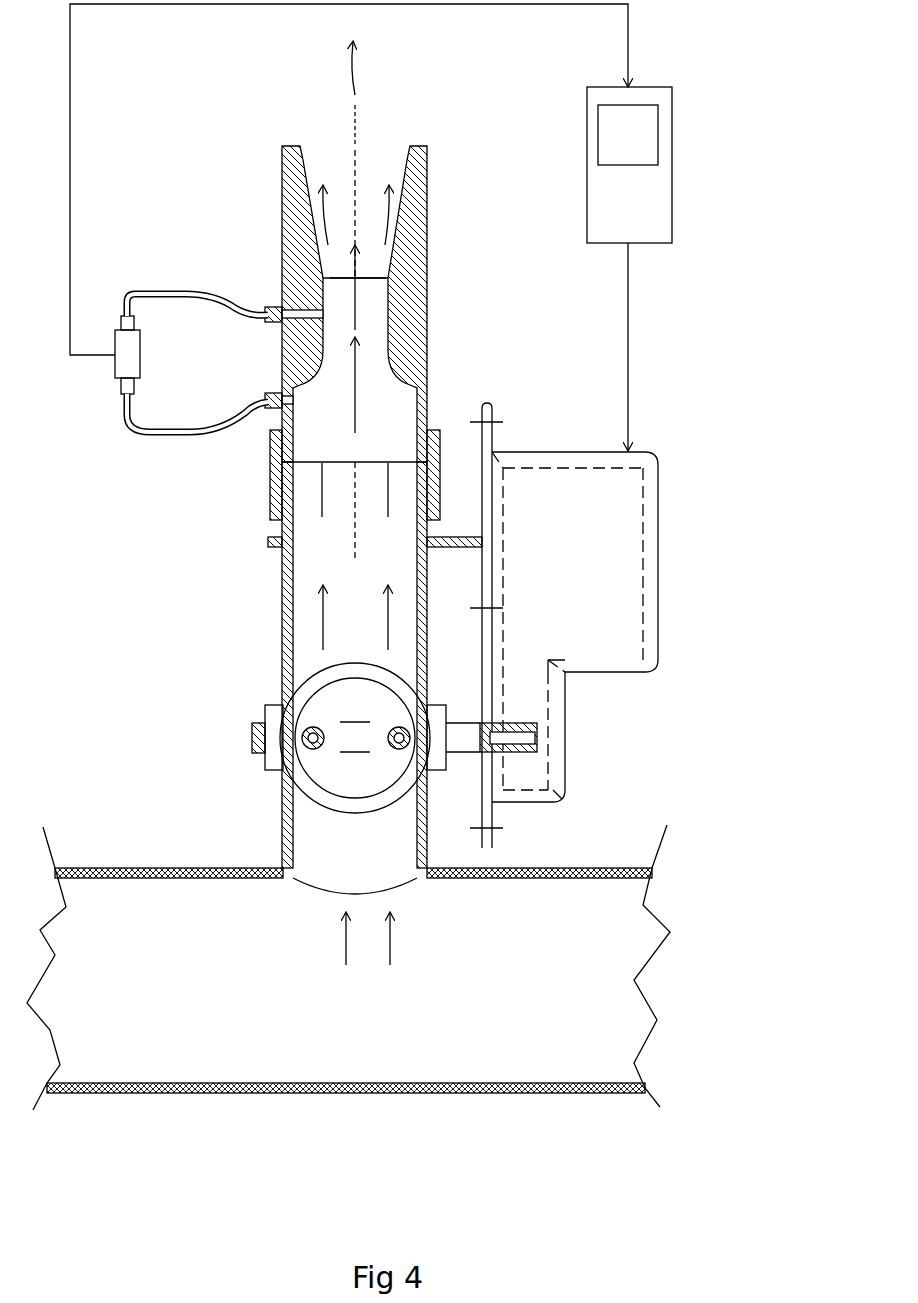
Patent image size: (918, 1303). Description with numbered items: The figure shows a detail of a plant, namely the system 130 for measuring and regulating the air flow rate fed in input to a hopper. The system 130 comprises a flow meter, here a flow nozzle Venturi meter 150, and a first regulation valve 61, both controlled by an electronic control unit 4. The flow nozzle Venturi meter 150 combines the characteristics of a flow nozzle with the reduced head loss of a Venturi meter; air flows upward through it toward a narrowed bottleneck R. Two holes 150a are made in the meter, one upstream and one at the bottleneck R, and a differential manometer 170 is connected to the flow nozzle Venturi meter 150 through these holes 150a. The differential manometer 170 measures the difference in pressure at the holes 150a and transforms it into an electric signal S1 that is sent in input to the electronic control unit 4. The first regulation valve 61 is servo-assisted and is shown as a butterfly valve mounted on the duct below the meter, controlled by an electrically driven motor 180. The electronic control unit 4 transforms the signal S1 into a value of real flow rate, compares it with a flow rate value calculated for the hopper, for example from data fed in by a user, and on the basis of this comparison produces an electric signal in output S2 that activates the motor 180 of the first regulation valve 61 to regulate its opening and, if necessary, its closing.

The electronic control unit 4 is at (648, 138).
The first regulation valve 61 is at (243, 740).
The system 130 is at (196, 534).
The flow nozzle Venturi meter 150 is at (428, 228).
The holes 150a is at (282, 306).
The differential manometer 170 is at (115, 366).
The electrically driven motor 180 is at (658, 575).
The bottleneck R is at (375, 322).
The electric signal S1 is at (341, 179).
The electric signal in output S2 is at (625, 346).